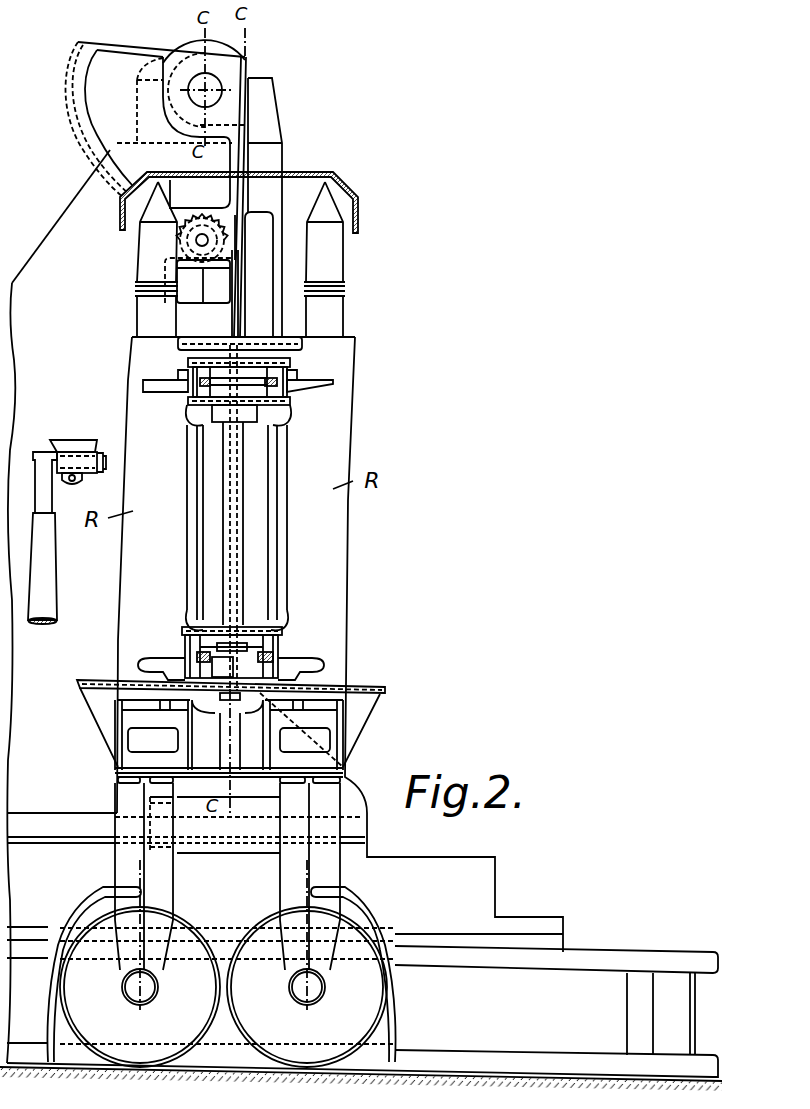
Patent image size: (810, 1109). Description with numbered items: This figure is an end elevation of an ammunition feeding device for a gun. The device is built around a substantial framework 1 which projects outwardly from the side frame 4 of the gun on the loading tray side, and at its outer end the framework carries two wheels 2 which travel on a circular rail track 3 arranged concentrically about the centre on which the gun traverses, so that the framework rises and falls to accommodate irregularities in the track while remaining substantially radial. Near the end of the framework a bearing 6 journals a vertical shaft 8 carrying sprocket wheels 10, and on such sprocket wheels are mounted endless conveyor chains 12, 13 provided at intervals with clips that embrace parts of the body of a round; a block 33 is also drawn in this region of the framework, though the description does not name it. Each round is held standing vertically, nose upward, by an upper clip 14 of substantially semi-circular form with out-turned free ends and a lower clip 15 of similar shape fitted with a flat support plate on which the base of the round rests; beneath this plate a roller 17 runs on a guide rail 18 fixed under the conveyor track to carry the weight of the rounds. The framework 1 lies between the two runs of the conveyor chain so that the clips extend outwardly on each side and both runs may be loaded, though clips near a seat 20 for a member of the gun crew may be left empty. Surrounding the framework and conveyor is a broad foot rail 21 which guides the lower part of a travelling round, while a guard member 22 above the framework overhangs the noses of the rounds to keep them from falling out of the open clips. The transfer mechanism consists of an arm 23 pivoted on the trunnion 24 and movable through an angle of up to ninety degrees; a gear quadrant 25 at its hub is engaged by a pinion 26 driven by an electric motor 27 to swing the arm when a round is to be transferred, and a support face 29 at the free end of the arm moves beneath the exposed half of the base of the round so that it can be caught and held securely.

The framework 1 is at (262, 486).
The wheels 2 is at (267, 913).
The circular rail track 3 is at (207, 1067).
The side frame 4 is at (62, 224).
The bearing 6 is at (207, 402).
The vertical shaft 8 is at (240, 535).
The sprocket wheels 10 is at (243, 380).
The endless conveyor chain 12 is at (270, 380).
The endless conveyor chain 13 is at (182, 644).
The upper clip 14 is at (158, 380).
The lower clip 15 is at (140, 660).
The roller 17 is at (132, 707).
The guide rail 18 is at (173, 708).
The seat 20 is at (85, 438).
The foot rail 21 is at (377, 686).
The guard member 22 is at (360, 194).
The arm 23 is at (237, 291).
The trunnion 24 is at (220, 82).
The gear quadrant 25 is at (80, 100).
The pinion 26 is at (187, 243).
The electric motor 27 is at (224, 243).
The support face 29 is at (265, 695).
The cross block 33 is at (213, 343).